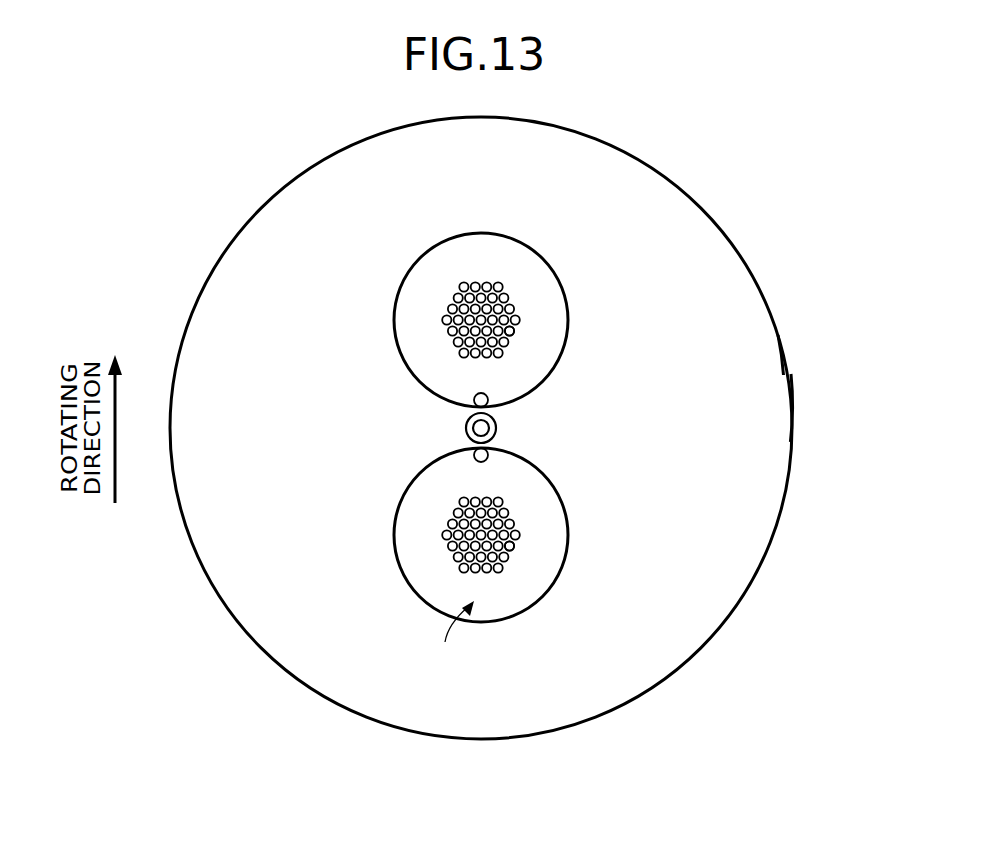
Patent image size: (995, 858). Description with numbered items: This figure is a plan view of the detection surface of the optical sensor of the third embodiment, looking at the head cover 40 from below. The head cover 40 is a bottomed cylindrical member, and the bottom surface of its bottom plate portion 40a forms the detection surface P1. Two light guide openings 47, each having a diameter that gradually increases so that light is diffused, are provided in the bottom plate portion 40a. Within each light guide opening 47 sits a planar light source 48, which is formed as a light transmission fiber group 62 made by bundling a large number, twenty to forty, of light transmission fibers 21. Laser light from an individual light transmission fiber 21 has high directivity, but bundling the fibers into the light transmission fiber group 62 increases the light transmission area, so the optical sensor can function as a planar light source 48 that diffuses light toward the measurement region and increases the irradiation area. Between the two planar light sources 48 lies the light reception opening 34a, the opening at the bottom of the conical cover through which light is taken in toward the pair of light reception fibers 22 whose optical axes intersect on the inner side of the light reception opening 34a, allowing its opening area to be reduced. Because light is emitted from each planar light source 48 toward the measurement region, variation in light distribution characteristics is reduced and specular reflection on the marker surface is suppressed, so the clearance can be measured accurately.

The head cover 40 is at (790, 468).
The bottom plate portion 40a is at (793, 400).
The detection surface P1 is at (765, 355).
The light guide opening 47 is at (546, 263).
The light transmission fiber group 62 is at (513, 309).
The light transmission fiber 21 is at (513, 331).
The light reception fiber 22 is at (489, 400).
The light reception opening 34a is at (497, 428).
The planar light source 48 is at (452, 638).